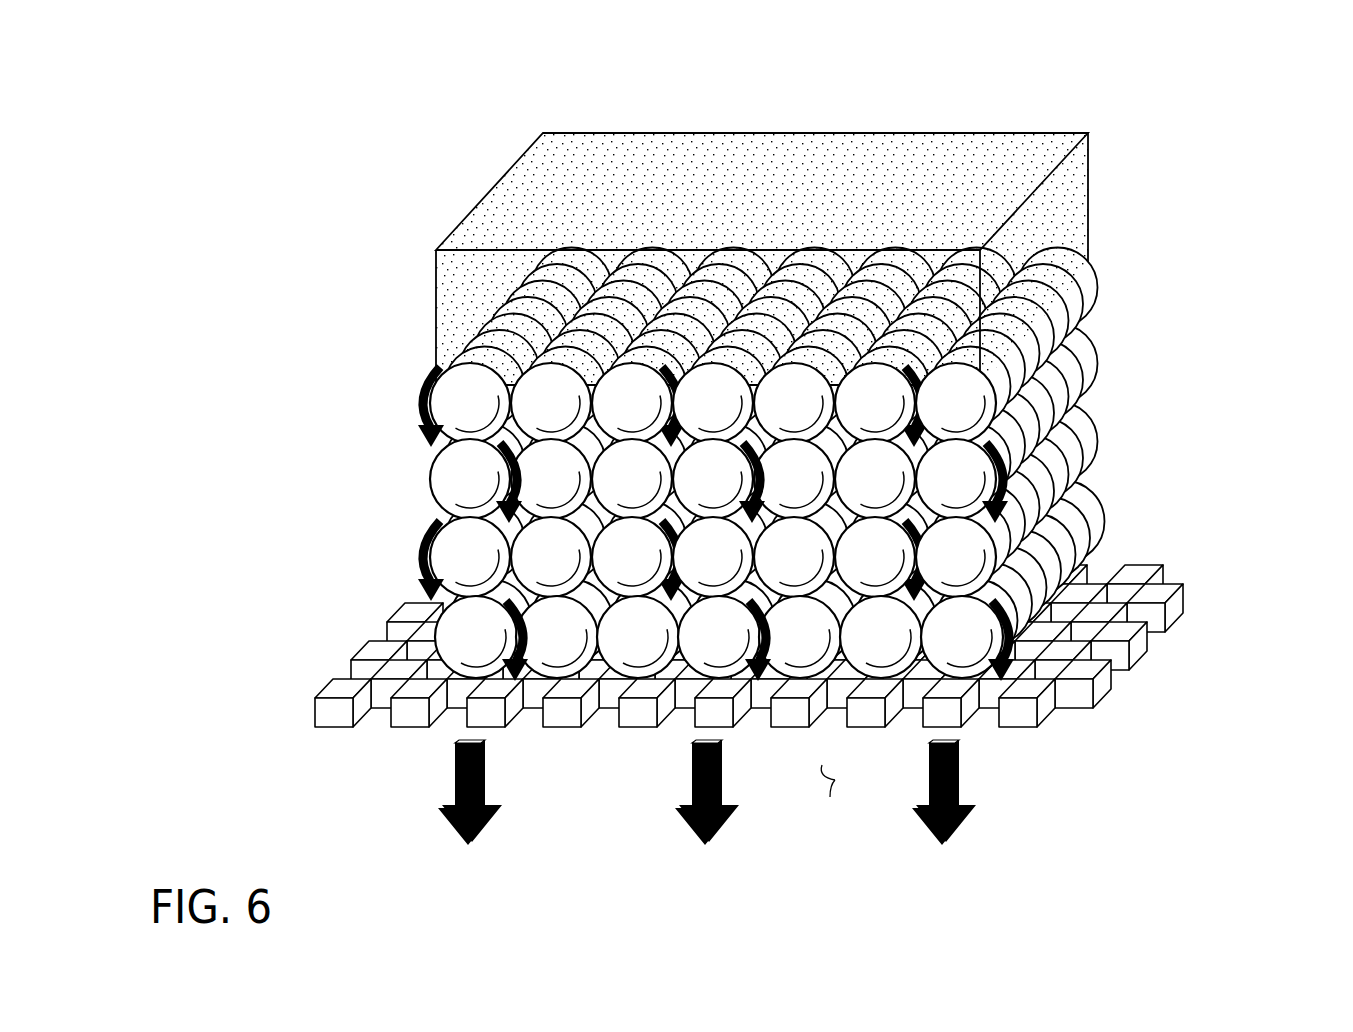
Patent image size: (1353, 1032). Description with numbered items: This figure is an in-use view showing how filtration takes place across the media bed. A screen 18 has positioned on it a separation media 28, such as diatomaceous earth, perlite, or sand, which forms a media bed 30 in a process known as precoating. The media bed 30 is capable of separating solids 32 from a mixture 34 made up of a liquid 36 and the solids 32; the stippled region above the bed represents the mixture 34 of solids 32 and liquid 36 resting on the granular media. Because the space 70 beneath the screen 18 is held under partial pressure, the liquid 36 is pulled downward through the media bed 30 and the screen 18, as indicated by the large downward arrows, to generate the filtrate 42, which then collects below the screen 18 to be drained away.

The screen 18 is at (1160, 573).
The separation media 28 is at (698, 347).
The media bed 30 is at (745, 347).
The solids 32 is at (769, 199).
The mixture 34 is at (769, 205).
The liquid 36 is at (1000, 190).
The filtrate 42 is at (692, 778).
The space 70 is at (835, 780).